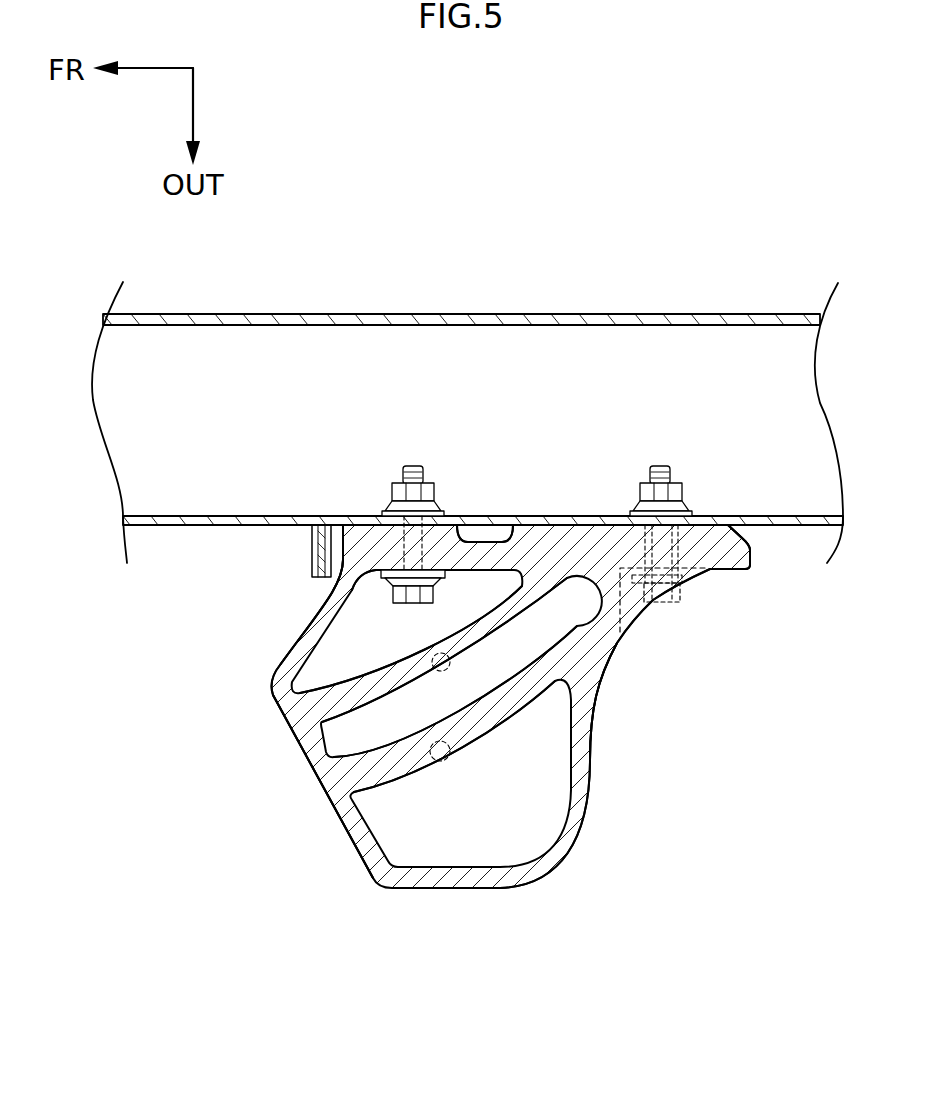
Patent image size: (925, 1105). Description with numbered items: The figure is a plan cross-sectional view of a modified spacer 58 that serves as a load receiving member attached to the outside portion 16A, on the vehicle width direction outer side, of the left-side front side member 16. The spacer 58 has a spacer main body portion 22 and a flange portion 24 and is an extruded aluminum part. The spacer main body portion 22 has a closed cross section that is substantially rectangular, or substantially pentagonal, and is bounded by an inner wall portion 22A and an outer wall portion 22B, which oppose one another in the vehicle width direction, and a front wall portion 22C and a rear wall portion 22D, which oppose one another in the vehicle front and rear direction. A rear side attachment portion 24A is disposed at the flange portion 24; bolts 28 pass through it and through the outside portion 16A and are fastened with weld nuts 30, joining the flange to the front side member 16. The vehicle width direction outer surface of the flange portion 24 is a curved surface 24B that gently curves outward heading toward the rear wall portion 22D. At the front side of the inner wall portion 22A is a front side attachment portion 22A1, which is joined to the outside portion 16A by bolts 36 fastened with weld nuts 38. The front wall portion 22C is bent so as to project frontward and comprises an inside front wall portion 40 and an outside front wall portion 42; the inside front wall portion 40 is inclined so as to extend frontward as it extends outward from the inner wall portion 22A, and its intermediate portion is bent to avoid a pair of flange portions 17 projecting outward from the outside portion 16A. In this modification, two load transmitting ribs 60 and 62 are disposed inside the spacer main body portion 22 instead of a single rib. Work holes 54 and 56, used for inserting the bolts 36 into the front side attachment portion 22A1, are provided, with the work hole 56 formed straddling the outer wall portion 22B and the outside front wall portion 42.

The front side member 16 is at (791, 307).
The outside portion 16A is at (800, 528).
The flange portions 17 is at (311, 569).
The spacer main body portion 22 is at (587, 815).
The inner wall portion 22A is at (511, 533).
The front side attachment portion 22A1 is at (388, 550).
The outer wall portion 22B is at (493, 888).
The front wall portion 22C is at (193, 655).
The rear wall portion 22D is at (593, 744).
The flange portion 24 is at (734, 582).
The rear side attachment portion 24A is at (718, 520).
The curved surface 24B is at (639, 617).
The bolts 28 is at (680, 604).
The weld nuts 30 is at (640, 490).
The bolts 36 is at (393, 594).
The weld nuts 38 is at (395, 488).
The inside front wall portion 40 is at (283, 650).
The outside front wall portion 42 is at (295, 742).
The work hole 54 is at (441, 673).
The work hole 56 is at (446, 880).
The spacer 58 is at (683, 795).
The load transmitting rib 60 is at (476, 648).
The load transmitting rib 62 is at (477, 745).